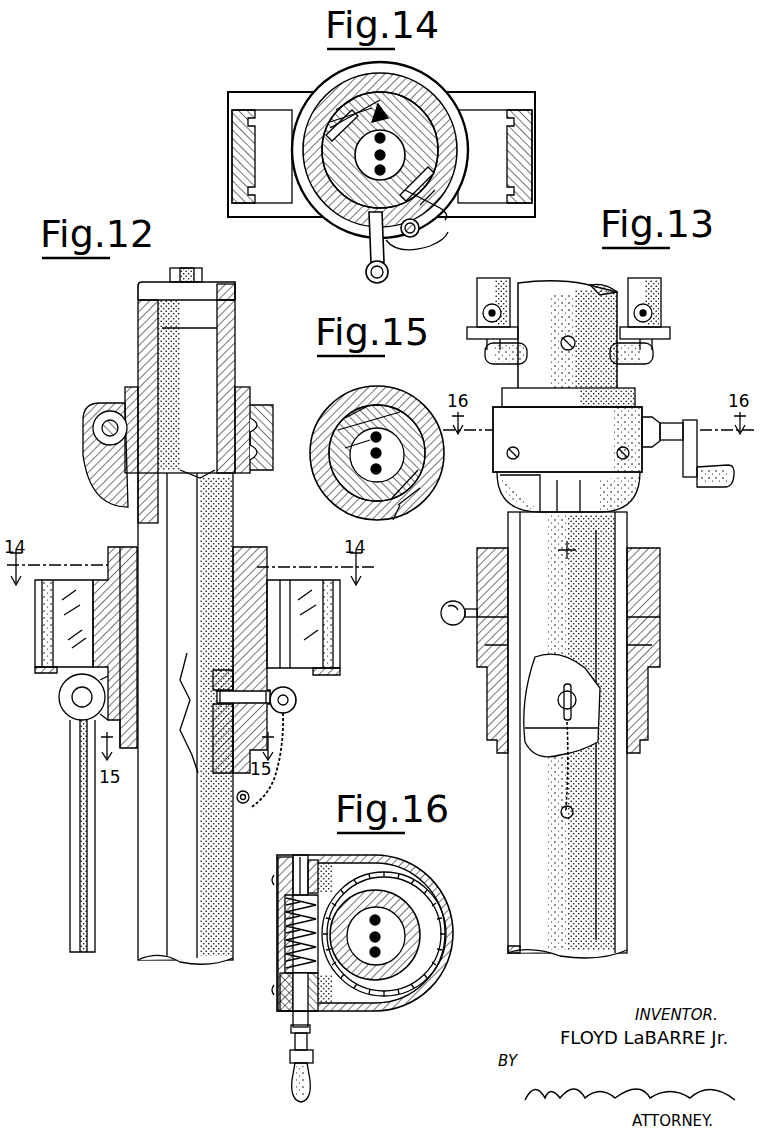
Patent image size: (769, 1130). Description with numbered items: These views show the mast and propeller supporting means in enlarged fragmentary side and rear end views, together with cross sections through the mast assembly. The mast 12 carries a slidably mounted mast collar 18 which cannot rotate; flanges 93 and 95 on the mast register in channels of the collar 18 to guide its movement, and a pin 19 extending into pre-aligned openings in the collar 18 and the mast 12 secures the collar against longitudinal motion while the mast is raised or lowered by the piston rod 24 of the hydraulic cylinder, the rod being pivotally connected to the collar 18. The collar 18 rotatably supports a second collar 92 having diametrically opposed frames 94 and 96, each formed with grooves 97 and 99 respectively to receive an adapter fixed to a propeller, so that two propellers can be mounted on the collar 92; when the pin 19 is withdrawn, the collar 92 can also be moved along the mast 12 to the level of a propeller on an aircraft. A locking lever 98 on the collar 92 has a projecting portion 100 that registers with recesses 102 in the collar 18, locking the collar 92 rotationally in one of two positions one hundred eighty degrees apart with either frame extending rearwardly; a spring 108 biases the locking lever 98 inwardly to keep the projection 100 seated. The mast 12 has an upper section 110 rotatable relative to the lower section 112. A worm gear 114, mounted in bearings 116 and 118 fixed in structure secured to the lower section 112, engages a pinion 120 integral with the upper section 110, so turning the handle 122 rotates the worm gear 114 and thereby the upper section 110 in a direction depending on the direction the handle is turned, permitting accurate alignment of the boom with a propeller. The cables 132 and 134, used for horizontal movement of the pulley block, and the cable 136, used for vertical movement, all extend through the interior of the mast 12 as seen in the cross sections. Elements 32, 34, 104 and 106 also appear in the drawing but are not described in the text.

In FIG. 14, the mast 12 is at (420, 112).
In FIG. 12, the mast 12 is at (144, 952).
In FIG. 15, the mast 12 is at (420, 500).
In FIG. 13, the mast 12 is at (620, 925).
In FIG. 16, the mast 12 is at (430, 962).
In FIG. 12, the mast collar 18 is at (296, 690).
In FIG. 13, the mast collar 18 is at (562, 700).
In FIG. 12, the pin 19 is at (297, 704).
In FIG. 12, the piston rod 24 is at (70, 918).
In FIG. 13, the bracket 32 is at (662, 307).
In FIG. 12, the bracket 34 is at (198, 272).
In FIG. 13, the bracket 34 is at (477, 300).
In FIG. 14, the second collar 92 is at (422, 230).
In FIG. 12, the second collar 92 is at (268, 560).
In FIG. 13, the second collar 92 is at (568, 650).
In FIG. 14, the flange 93 is at (352, 225).
In FIG. 15, the flange 93 is at (393, 522).
In FIG. 14, the frame 94 is at (236, 91).
In FIG. 14, the flange 95 is at (350, 100).
In FIG. 15, the flange 95 is at (390, 405).
In FIG. 14, the frame 96 is at (534, 94).
In FIG. 14, the groove 97 is at (242, 125).
In FIG. 14, the locking lever 98 is at (386, 262).
In FIG. 13, the locking lever 98 is at (453, 627).
In FIG. 14, the groove 99 is at (520, 180).
In FIG. 14, the projecting portion 100 is at (415, 192).
In FIG. 14, the recess 102 is at (398, 98).
In FIG. 12, the lower tube 104 is at (185, 968).
In FIG. 13, the lower tube 104 is at (508, 780).
In FIG. 13, the tube wall 106 is at (630, 793).
In FIG. 14, the spring 108 is at (400, 250).
In FIG. 12, the upper section of the mast 110 is at (138, 320).
In FIG. 13, the upper section of the mast 110 is at (578, 296).
In FIG. 14, the lower section of the mast 112 is at (335, 228).
In FIG. 12, the lower section of the mast 112 is at (228, 372).
In FIG. 15, the lower section of the mast 112 is at (336, 494).
In FIG. 16, the lower section of the mast 112 is at (383, 1002).
In FIG. 12, the worm gear 114 is at (84, 445).
In FIG. 16, the worm gear 114 is at (280, 982).
In FIG. 13, the bearing 116 is at (505, 500).
In FIG. 16, the bearing 116 is at (292, 858).
In FIG. 13, the bearing 118 is at (632, 490).
In FIG. 16, the bearing 118 is at (280, 1002).
In FIG. 12, the pinion 120 is at (268, 432).
In FIG. 16, the pinion 120 is at (440, 905).
In FIG. 13, the handle 122 is at (716, 489).
In FIG. 16, the handle 122 is at (292, 1092).
In FIG. 14, the cable 132 is at (386, 170).
In FIG. 15, the cable 132 is at (382, 470).
In FIG. 14, the cable 134 is at (386, 138).
In FIG. 15, the cable 134 is at (382, 455).
In FIG. 14, the cable 136 is at (380, 138).
In FIG. 15, the cable 136 is at (345, 464).